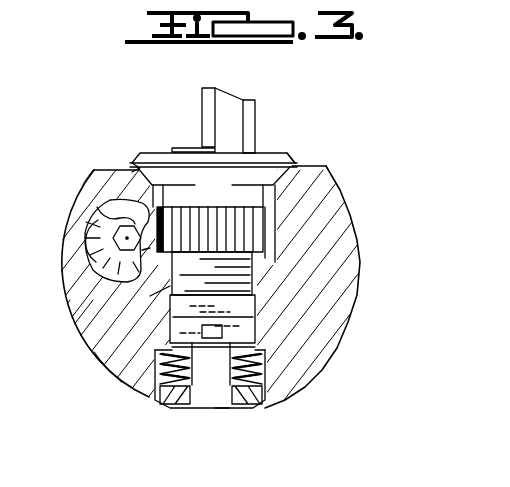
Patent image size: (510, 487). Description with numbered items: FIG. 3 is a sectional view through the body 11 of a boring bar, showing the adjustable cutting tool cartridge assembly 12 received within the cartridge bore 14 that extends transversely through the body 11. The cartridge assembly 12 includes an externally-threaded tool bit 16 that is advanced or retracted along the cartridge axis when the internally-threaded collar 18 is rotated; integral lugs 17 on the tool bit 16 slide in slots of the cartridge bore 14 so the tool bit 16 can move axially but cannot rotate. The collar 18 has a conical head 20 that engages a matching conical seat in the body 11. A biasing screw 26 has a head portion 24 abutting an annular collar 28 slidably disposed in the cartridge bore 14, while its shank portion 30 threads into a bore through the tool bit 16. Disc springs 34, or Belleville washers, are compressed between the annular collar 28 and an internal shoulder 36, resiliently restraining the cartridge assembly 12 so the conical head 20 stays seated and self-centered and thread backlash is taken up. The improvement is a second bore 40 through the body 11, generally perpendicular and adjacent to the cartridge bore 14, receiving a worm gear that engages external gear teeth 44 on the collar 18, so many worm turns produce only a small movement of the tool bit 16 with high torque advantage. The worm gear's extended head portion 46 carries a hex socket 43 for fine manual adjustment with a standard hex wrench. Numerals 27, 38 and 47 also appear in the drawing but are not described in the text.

The body 11 is at (344, 241).
The adjustable cutting tool cartridge assembly 12 is at (307, 137).
The cartridge bore 14 is at (150, 296).
The tool bit 16 is at (230, 98).
The lugs 17 is at (121, 379).
The collar 18 is at (243, 192).
The conical head 20 is at (297, 165).
The head portion 24 is at (200, 408).
The biasing screw 26 is at (226, 418).
The set screw 27 is at (139, 166).
The annular collar 28 is at (162, 405).
The shank portion 30 is at (253, 410).
The disc springs 34 is at (264, 371).
The internal shoulder 36 is at (267, 351).
The washer 38 is at (284, 180).
The second bore 40 is at (113, 203).
The hex socket 43 is at (113, 240).
The external gear teeth 44 is at (254, 280).
The extended head portion 46 is at (78, 228).
The worm gear 47 is at (173, 195).